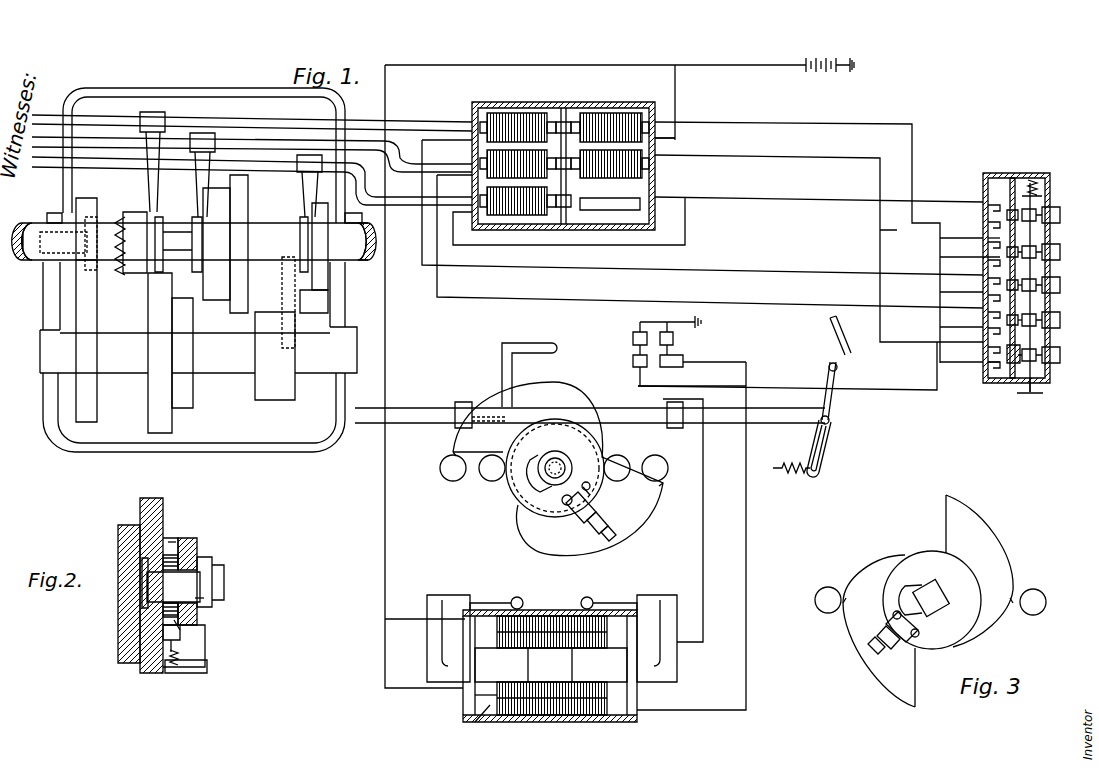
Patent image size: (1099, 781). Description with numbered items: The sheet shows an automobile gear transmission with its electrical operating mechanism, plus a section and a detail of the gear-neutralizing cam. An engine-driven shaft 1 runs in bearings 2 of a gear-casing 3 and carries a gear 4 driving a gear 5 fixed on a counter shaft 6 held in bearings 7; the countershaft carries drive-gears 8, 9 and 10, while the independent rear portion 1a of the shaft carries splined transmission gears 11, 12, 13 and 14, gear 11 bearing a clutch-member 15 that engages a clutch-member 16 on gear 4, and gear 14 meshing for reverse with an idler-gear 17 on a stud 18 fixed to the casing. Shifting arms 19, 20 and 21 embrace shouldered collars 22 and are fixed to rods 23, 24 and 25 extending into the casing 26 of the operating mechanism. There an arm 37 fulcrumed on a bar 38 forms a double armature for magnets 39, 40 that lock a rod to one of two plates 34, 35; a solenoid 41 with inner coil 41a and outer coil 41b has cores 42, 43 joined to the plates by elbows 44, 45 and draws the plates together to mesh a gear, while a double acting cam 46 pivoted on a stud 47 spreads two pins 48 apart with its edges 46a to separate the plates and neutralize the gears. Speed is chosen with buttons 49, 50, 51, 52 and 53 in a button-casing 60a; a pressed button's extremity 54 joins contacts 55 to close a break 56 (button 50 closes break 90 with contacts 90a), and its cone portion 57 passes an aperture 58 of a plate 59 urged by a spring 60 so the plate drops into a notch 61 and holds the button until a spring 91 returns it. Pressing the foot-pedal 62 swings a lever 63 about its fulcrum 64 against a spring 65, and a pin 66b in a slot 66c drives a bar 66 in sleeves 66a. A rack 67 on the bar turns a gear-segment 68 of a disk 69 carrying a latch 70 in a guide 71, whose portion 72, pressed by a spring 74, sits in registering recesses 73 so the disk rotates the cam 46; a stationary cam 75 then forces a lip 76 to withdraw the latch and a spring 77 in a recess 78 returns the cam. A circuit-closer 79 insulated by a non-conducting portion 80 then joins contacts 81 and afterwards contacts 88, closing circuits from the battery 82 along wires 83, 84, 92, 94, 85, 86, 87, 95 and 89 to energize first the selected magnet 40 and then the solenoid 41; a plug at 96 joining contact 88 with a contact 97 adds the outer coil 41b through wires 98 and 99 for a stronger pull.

In FIG. 1, the shaft 1 is at (34, 224).
In FIG. 1, the rear portion of shaft 1a is at (328, 242).
In FIG. 1, the bearings 2 is at (55, 213).
In FIG. 1, the gear-casing 3 is at (62, 174).
In FIG. 1, the gear 4 is at (85, 200).
In FIG. 1, the gear 5 is at (86, 291).
In FIG. 1, the counter shaft 6 is at (195, 353).
In FIG. 1, the bearings 7 is at (48, 330).
In FIG. 1, the drive-gear 8 is at (160, 353).
In FIG. 1, the drive-gear 9 is at (182, 353).
In FIG. 1, the drive-gear 10 is at (275, 356).
In FIG. 1, the transmission gear 11 is at (135, 272).
In FIG. 1, the transmission gear 12 is at (216, 298).
In FIG. 1, the transmission gear 13 is at (240, 310).
In FIG. 1, the transmission gear 14 is at (328, 280).
In FIG. 1, the clutch-member 15 is at (130, 214).
In FIG. 1, the clutch-member 16 is at (101, 234).
In FIG. 1, the intermediate idler-gear 17 is at (280, 278).
In FIG. 1, the stud 18 is at (48, 245).
In FIG. 1, the arm 19 is at (146, 178).
In FIG. 1, the arm 20 is at (198, 186).
In FIG. 1, the arm 21 is at (304, 186).
In FIG. 1, the shouldered collars 22 is at (194, 218).
In FIG. 1, the rod 23 is at (33, 116).
In FIG. 1, the rod 24 is at (33, 138).
In FIG. 1, the rod 25 is at (33, 155).
In FIG. 1, the casing 26 is at (492, 95).
In FIG. 2, the casing 26 is at (118, 628).
In FIG. 1, the plate 34 is at (485, 600).
In FIG. 1, the plate 35 is at (617, 600).
In FIG. 1, the arm 37 is at (567, 110).
In FIG. 1, the bar 38 is at (560, 112).
In FIG. 1, the magnet 39 is at (517, 112).
In FIG. 1, the magnet 40 is at (616, 112).
In FIG. 1, the solenoid 41 is at (562, 722).
In FIG. 1, the inner coil 41a is at (475, 698).
In FIG. 1, the outer coil 41b is at (485, 722).
In FIG. 1, the core 42 is at (551, 665).
In FIG. 1, the core 43 is at (589, 665).
In FIG. 1, the elbow 44 is at (427, 636).
In FIG. 1, the elbow 45 is at (675, 650).
In FIG. 1, the double acting cam 46 is at (548, 512).
In FIG. 2, the double acting cam 46 is at (160, 500).
In FIG. 3, the double acting cam 46 is at (980, 584).
In FIG. 1, the edges 46a is at (602, 427).
In FIG. 3, the edges 46a is at (856, 592).
In FIG. 1, the stud 47 is at (558, 458).
In FIG. 2, the stud 47 is at (171, 583).
In FIG. 3, the stud 47 is at (944, 596).
In FIG. 1, the pins 48 is at (452, 480).
In FIG. 3, the pins 48 is at (826, 612).
In FIG. 1, the button 49 is at (1060, 214).
In FIG. 1, the button 50 is at (1060, 249).
In FIG. 1, the button 51 is at (1060, 286).
In FIG. 1, the button 52 is at (1060, 321).
In FIG. 1, the button 53 is at (1060, 356).
In FIG. 1, the extremity 54 is at (1006, 345).
In FIG. 1, the contacts 55 is at (961, 353).
In FIG. 1, the break 56 is at (976, 355).
In FIG. 1, the cone portion 57 is at (1032, 325).
In FIG. 1, the aperture 58 is at (1036, 372).
In FIG. 1, the plate 59 is at (1030, 290).
In FIG. 1, the spring 60 is at (1042, 192).
In FIG. 1, the button-casing 60a is at (1028, 173).
In FIG. 1, the notch 61 is at (1030, 252).
In FIG. 1, the foot-pedal 62 is at (840, 338).
In FIG. 1, the lever 63 is at (826, 396).
In FIG. 1, the fulcrum 64 is at (829, 366).
In FIG. 1, the spring 65 is at (790, 475).
In FIG. 1, the bar 66 is at (608, 410).
In FIG. 1, the sleeves 66a is at (456, 425).
In FIG. 1, the pin 66b is at (832, 420).
In FIG. 1, the slot 66c is at (820, 452).
In FIG. 1, the rack 67 is at (492, 424).
In FIG. 1, the gear-segment 68 is at (508, 494).
In FIG. 2, the gear-segment 68 is at (197, 536).
In FIG. 1, the disk 69 is at (569, 467).
In FIG. 2, the disk 69 is at (197, 548).
In FIG. 3, the disk 69 is at (932, 600).
In FIG. 1, the latch 70 is at (598, 500).
In FIG. 2, the latch 70 is at (195, 635).
In FIG. 3, the latch 70 is at (896, 648).
In FIG. 1, the guide 71 is at (584, 520).
In FIG. 2, the guide 71 is at (205, 656).
In FIG. 3, the guide 71 is at (880, 630).
In FIG. 2, the portion 72 is at (181, 638).
In FIG. 2, the recesses 73 is at (195, 614).
In FIG. 1, the spring 74 is at (600, 530).
In FIG. 2, the spring 74 is at (188, 673).
In FIG. 3, the spring 74 is at (886, 656).
In FIG. 1, the stationary cam 75 is at (539, 473).
In FIG. 2, the stationary cam 75 is at (212, 568).
In FIG. 3, the stationary cam 75 is at (911, 604).
In FIG. 1, the lip 76 is at (562, 501).
In FIG. 2, the lip 76 is at (205, 600).
In FIG. 2, the spring 77 is at (184, 530).
In FIG. 2, the recess 78 is at (172, 554).
In FIG. 1, the circuit-closer 79 is at (540, 345).
In FIG. 1, the non-conducting portion 80 is at (512, 344).
In FIG. 1, the contacts 81 is at (633, 339).
In FIG. 1, the battery 82 is at (812, 57).
In FIG. 1, the wire 83 is at (408, 65).
In FIG. 1, the wire 84 is at (676, 110).
In FIG. 1, the wire 85 is at (728, 157).
In FIG. 1, the wire 86 is at (950, 380).
In FIG. 1, the wire 87 is at (842, 72).
In FIG. 1, the contacts 88 is at (673, 339).
In FIG. 1, the wire 89 is at (685, 321).
In FIG. 1, the break 90 is at (980, 246).
In FIG. 1, the contacts 90a is at (970, 247).
In FIG. 1, the spring 91 is at (1033, 236).
In FIG. 1, the wire 92 is at (676, 139).
In FIG. 1, the wires 94 is at (776, 124).
In FIG. 1, the wires 95 is at (940, 242).
In FIG. 1, the plug insertion point 96 is at (690, 362).
In FIG. 1, the contact 97 is at (690, 380).
In FIG. 1, the wire 98 is at (425, 608).
In FIG. 1, the wire 99 is at (748, 362).